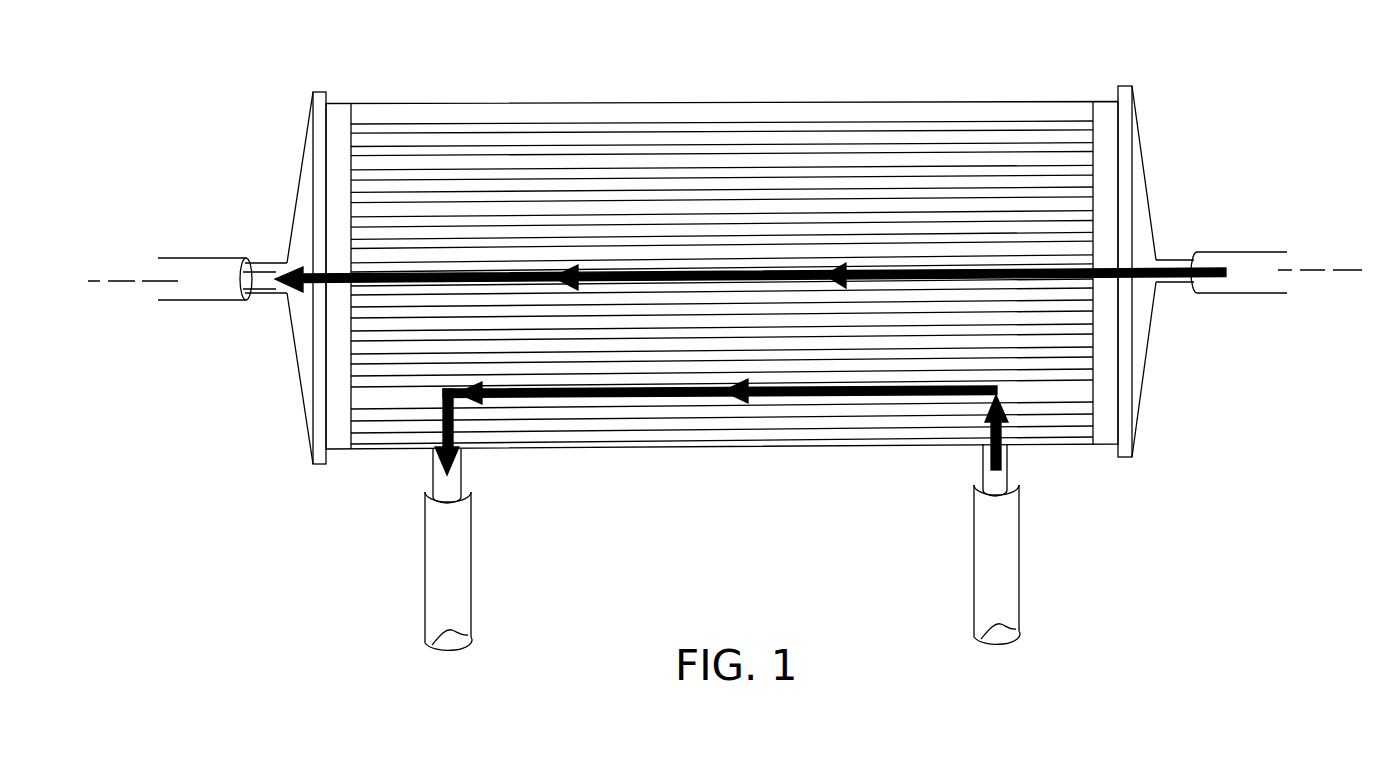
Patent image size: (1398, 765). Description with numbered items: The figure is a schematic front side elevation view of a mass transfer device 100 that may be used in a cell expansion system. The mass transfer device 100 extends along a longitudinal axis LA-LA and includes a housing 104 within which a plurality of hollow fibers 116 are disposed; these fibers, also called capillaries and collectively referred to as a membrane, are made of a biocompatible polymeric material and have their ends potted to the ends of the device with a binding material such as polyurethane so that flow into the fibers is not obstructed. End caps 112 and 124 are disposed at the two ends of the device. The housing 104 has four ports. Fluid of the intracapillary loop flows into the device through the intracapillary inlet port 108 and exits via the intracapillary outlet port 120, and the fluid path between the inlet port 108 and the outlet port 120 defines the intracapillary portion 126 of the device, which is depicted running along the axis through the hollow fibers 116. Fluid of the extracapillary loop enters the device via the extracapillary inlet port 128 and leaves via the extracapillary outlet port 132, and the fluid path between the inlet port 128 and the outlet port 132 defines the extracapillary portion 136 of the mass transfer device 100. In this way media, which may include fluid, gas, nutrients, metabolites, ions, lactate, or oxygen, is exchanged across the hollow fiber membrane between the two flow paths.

The mass transfer device 100 is at (375, 505).
The housing 104 is at (820, 103).
The intracapillary (IC) inlet port 108 is at (1245, 294).
The end cap 112 is at (1145, 173).
The hollow fibers 116 is at (553, 143).
The intracapillary (IC) outlet port 120 is at (203, 301).
The end cap 124 is at (301, 182).
The intracapillary portion 126 is at (549, 270).
The extracapillary (EC) inlet port 128 is at (1020, 550).
The extracapillary (EC) outlet port 132 is at (471, 558).
The EC portion 136 is at (684, 398).